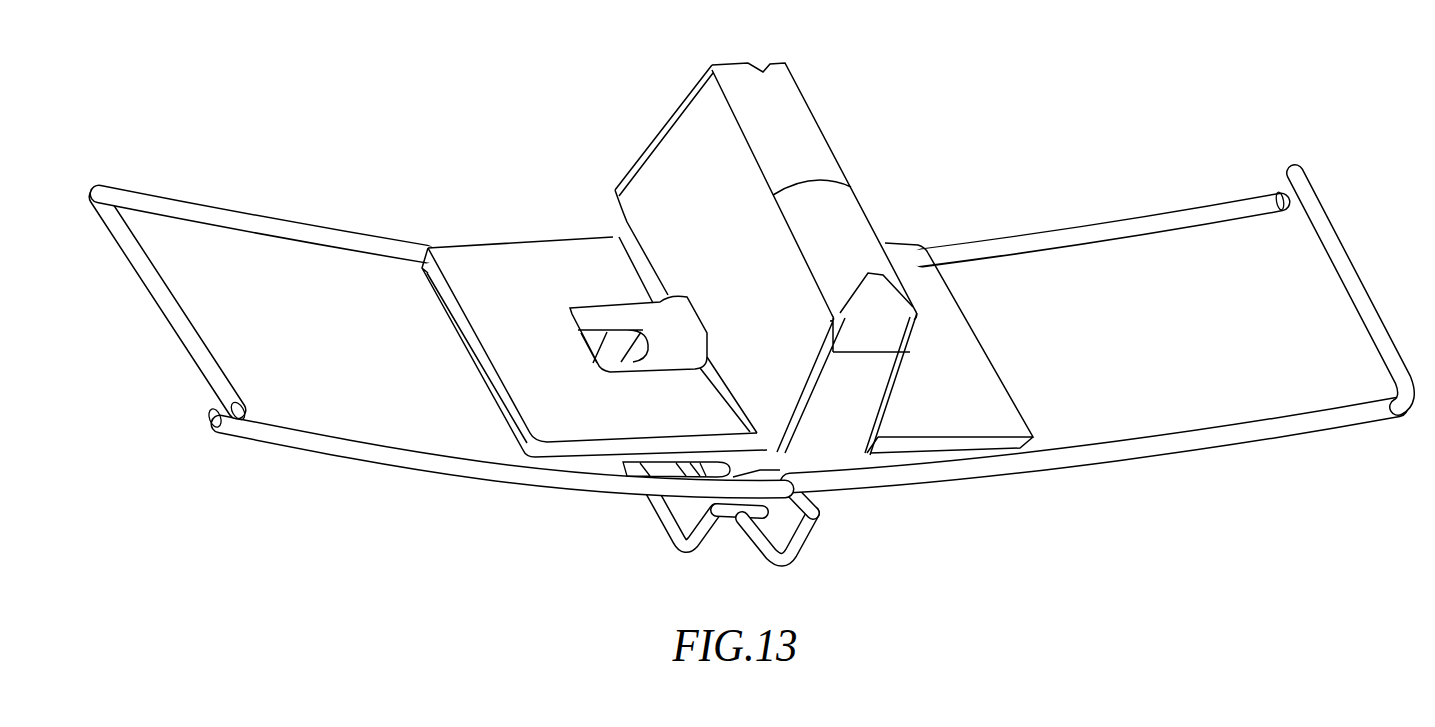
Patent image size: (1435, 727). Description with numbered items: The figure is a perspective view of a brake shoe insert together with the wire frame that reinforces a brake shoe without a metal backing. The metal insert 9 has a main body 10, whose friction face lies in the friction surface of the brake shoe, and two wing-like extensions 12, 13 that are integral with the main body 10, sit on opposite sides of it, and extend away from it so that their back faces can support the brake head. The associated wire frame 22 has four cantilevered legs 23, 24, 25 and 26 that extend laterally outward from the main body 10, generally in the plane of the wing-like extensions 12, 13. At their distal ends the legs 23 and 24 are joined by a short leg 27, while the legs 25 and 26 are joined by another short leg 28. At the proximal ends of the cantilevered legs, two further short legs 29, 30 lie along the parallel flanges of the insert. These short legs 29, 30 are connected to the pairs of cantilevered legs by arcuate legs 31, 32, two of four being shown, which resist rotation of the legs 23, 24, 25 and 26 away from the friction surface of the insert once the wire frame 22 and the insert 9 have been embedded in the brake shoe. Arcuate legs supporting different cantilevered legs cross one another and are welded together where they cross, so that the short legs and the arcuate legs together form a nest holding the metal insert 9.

The metal insert 9 is at (811, 102).
The main body 10 is at (743, 258).
The wing-like extension 12 is at (537, 253).
The wing-like extension 13 is at (910, 252).
The wire frame 22 is at (752, 355).
The cantilevered leg 23 is at (1143, 218).
The cantilevered leg 24 is at (1137, 443).
The cantilevered leg 25 is at (222, 218).
The cantilevered leg 26 is at (318, 440).
The short leg 27 is at (1327, 228).
The short leg 28 is at (182, 320).
The short leg 29 is at (652, 507).
The short leg 30 is at (750, 528).
The arcuate leg 31 is at (805, 497).
The arcuate leg 32 is at (720, 500).